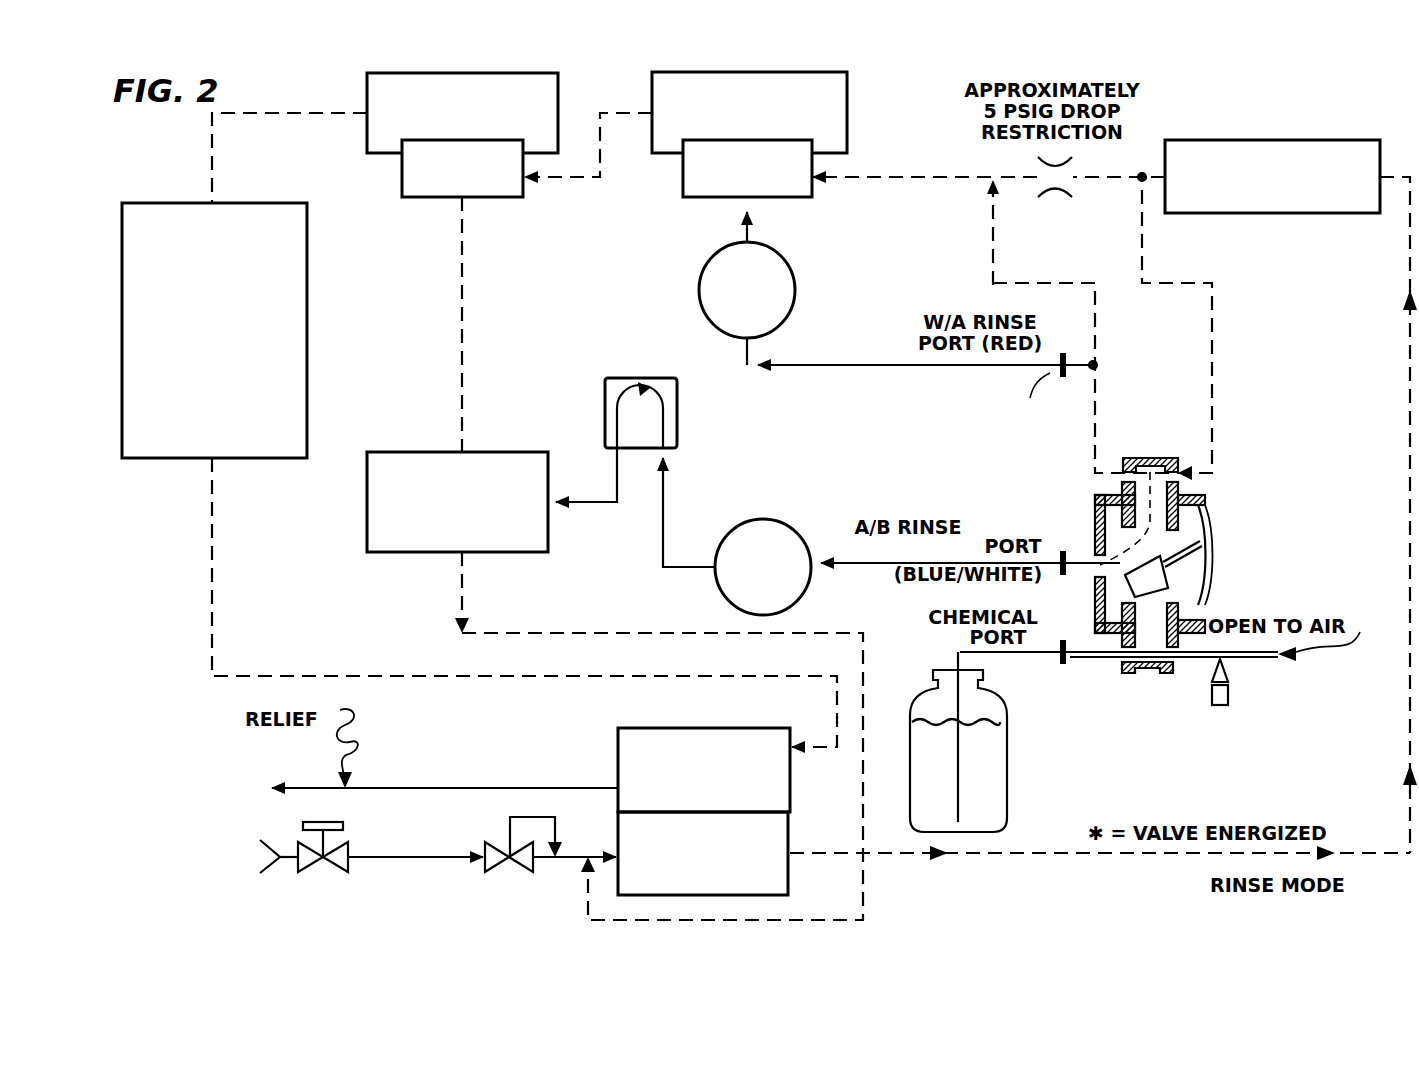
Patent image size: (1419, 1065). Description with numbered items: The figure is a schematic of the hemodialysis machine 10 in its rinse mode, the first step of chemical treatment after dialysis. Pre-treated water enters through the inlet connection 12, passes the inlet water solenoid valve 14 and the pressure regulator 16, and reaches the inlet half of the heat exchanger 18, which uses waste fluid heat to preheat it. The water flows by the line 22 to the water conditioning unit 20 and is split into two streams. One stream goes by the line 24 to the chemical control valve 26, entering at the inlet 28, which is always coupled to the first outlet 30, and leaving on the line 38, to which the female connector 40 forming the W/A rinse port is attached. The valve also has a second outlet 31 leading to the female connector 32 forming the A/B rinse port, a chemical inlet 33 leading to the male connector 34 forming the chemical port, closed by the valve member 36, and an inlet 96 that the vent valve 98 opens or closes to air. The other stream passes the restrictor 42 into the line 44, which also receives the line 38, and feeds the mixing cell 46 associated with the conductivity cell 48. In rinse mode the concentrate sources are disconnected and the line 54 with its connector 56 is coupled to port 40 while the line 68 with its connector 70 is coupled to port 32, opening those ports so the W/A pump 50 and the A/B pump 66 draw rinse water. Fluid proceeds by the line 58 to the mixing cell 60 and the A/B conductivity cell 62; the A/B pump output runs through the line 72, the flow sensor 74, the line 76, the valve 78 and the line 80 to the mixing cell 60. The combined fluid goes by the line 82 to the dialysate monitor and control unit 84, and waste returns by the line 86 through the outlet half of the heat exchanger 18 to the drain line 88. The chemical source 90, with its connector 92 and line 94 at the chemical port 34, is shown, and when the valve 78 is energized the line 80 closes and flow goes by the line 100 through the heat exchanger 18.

The hemodialysis machine 10 is at (1203, 96).
The inlet connection 12 is at (282, 846).
The inlet water solenoid valve 14 is at (350, 848).
The pressure regulator 16 is at (486, 846).
The heat exchanger 18 is at (780, 842).
The water conditioning unit 20 is at (1330, 150).
The line 22 is at (1410, 503).
The line 24 is at (1212, 393).
The chemical control valve 26 is at (1232, 510).
The inlet 28 is at (1195, 472).
The first outlet 30 is at (1117, 470).
The second outlet 31 is at (1090, 553).
The female connector 32 is at (1066, 548).
The chemical inlet 33 is at (1120, 680).
The male connector 34 is at (1063, 665).
The valve member 36 is at (1206, 548).
The line 38 is at (1100, 428).
The female connector 40 is at (1070, 378).
The restrictor 42 is at (1103, 182).
The line 44 is at (878, 172).
The mixing cell 46 is at (795, 190).
The conductivity cell 48 is at (847, 112).
The W/A pump 50 is at (793, 282).
The line 54 is at (803, 365).
The connector 56 is at (1026, 392).
The line 58 is at (600, 140).
The mixing cell 60 is at (500, 190).
The A/B conductivity cell 62 is at (558, 102).
The A/B pump 66 is at (798, 540).
The line 68 is at (860, 566).
The connector 70 is at (1058, 578).
The line 72 is at (663, 512).
The flow sensor 74 is at (677, 398).
The line 76 is at (588, 502).
The valve 78 is at (510, 456).
The line 80 is at (462, 352).
The line 82 is at (292, 118).
The dialysate monitor and control unit 84 is at (214, 330).
The line 86 is at (308, 676).
The drain line 88 is at (465, 790).
The chemical source 90 is at (1002, 796).
The connector 92 is at (1055, 662).
The line 94 is at (958, 668).
The inlet 96 is at (1178, 674).
The vent valve 98 is at (1220, 705).
The line 100 is at (862, 745).